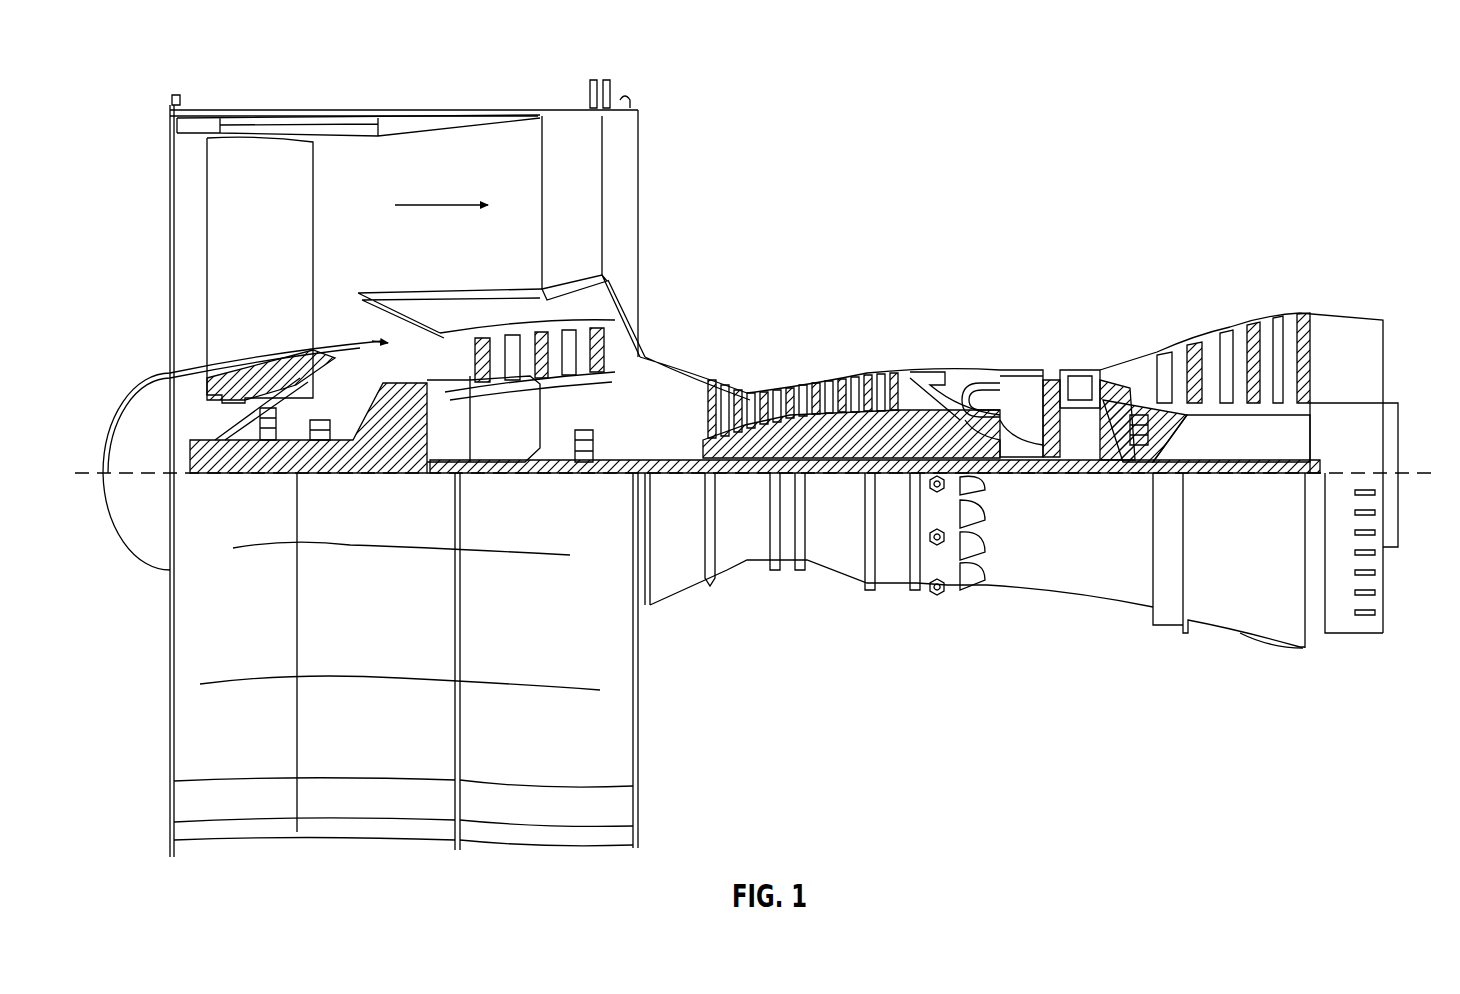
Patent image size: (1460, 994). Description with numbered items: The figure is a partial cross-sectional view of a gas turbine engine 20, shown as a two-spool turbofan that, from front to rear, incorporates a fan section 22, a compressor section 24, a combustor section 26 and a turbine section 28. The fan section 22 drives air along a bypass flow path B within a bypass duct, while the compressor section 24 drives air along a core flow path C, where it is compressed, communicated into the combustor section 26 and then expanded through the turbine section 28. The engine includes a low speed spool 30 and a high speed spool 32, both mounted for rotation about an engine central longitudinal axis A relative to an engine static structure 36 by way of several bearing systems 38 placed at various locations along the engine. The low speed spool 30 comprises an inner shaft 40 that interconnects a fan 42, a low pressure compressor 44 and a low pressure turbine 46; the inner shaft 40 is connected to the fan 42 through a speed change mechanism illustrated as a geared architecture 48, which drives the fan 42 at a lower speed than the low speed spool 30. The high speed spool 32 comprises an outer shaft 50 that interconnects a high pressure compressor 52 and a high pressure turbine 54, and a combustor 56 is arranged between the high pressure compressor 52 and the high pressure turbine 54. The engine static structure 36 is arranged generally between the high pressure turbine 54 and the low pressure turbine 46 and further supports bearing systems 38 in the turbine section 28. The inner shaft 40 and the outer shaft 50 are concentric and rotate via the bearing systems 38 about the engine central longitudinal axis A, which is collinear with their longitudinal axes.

The gas turbine engine 20 is at (1256, 120).
The fan section 22 is at (278, 104).
The compressor section 24 is at (813, 285).
The combustor section 26 is at (1008, 266).
The turbine section 28 is at (1160, 256).
The low speed spool 30 is at (855, 480).
The high speed spool 32 is at (905, 432).
The engine static structure 36 is at (893, 592).
The bearing systems 38 is at (262, 447).
The inner shaft 40 is at (655, 478).
The fan 42 is at (273, 254).
The low pressure compressor 44 is at (555, 352).
The low pressure turbine 46 is at (1240, 334).
The geared architecture 48 is at (412, 457).
The outer shaft 50 is at (1020, 462).
The high pressure compressor 52 is at (802, 445).
The high pressure turbine 54 is at (1072, 370).
The combustor 56 is at (990, 394).
The engine central longitudinal axis A is at (1420, 470).
The bypass flow path B is at (428, 205).
The core flow path C is at (303, 333).